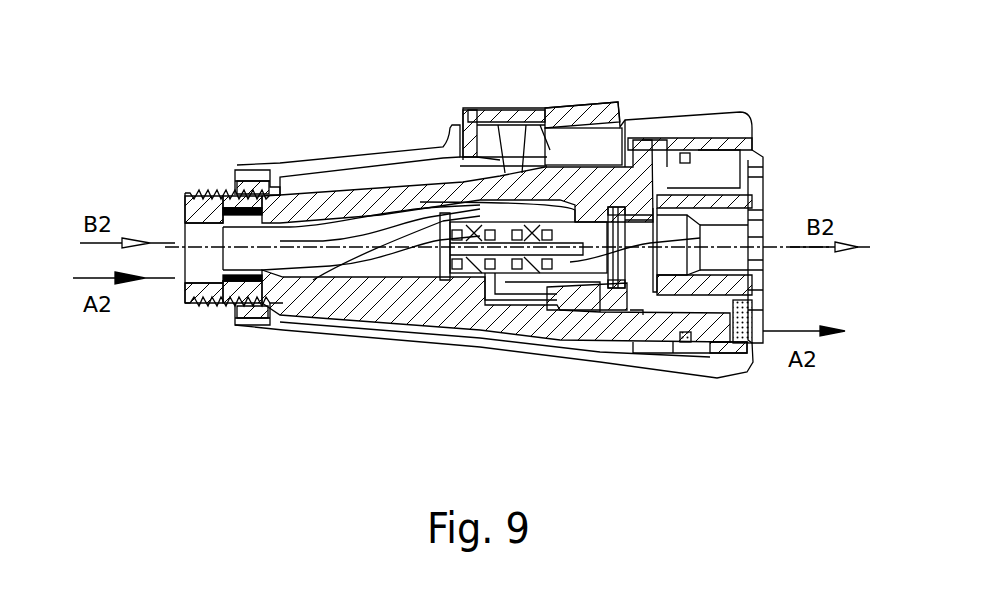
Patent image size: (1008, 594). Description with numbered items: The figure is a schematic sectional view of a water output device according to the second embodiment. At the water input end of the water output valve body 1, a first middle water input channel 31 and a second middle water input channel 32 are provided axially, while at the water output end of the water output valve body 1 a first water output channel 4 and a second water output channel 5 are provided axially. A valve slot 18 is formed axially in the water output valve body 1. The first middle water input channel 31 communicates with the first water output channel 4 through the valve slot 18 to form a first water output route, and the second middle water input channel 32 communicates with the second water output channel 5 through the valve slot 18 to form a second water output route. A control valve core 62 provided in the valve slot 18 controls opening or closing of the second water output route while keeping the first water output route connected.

The water output valve body 1 is at (355, 203).
The first water output channel 4 is at (557, 297).
The second water output channel 5 is at (720, 232).
The valve slot 18 is at (603, 268).
The first middle water input channel 31 is at (228, 301).
The second middle water input channel 32 is at (287, 238).
The control valve core 62 is at (535, 233).